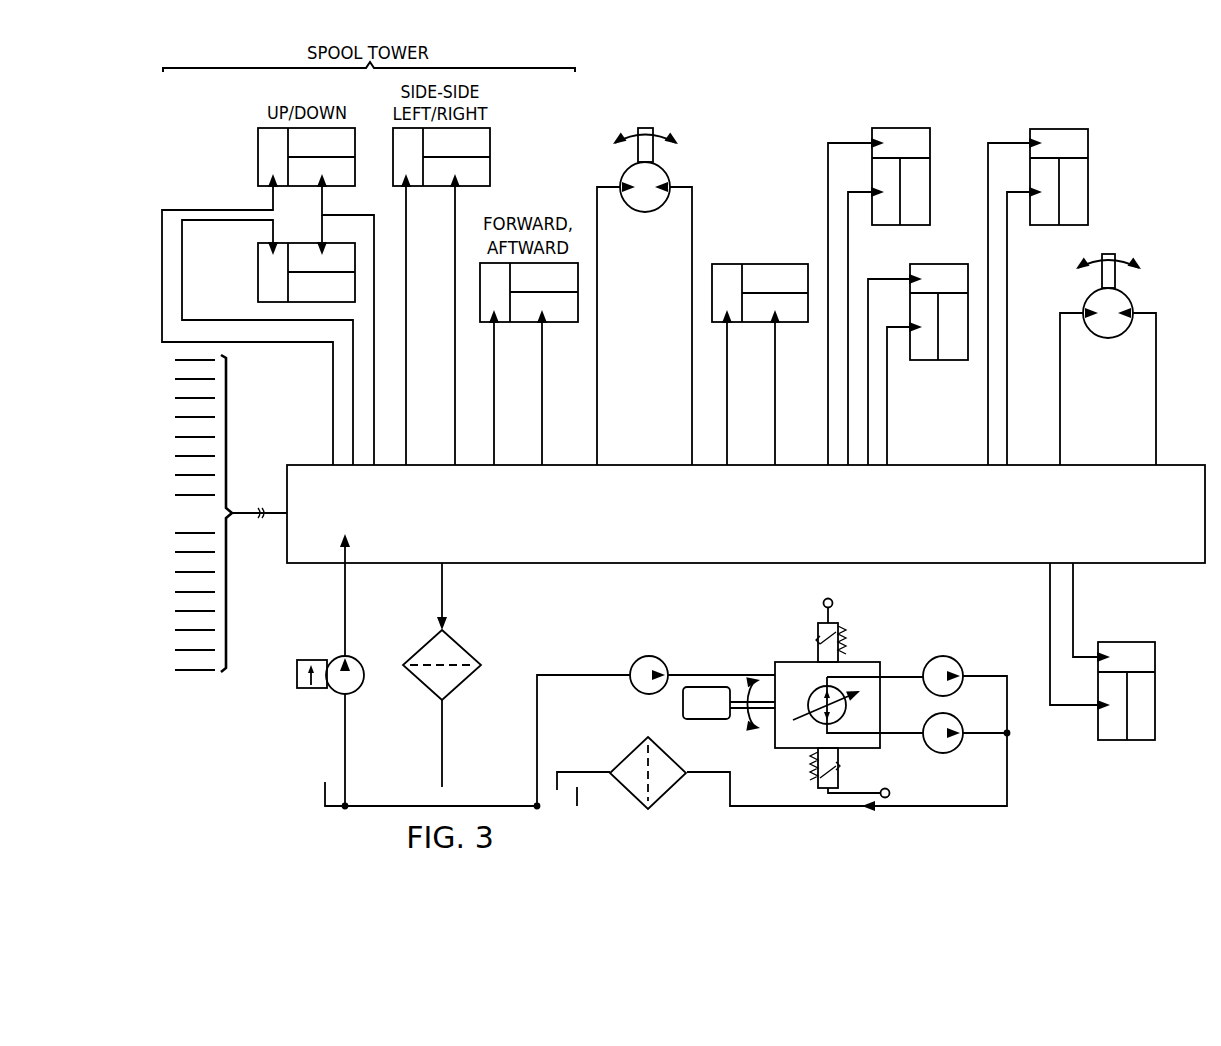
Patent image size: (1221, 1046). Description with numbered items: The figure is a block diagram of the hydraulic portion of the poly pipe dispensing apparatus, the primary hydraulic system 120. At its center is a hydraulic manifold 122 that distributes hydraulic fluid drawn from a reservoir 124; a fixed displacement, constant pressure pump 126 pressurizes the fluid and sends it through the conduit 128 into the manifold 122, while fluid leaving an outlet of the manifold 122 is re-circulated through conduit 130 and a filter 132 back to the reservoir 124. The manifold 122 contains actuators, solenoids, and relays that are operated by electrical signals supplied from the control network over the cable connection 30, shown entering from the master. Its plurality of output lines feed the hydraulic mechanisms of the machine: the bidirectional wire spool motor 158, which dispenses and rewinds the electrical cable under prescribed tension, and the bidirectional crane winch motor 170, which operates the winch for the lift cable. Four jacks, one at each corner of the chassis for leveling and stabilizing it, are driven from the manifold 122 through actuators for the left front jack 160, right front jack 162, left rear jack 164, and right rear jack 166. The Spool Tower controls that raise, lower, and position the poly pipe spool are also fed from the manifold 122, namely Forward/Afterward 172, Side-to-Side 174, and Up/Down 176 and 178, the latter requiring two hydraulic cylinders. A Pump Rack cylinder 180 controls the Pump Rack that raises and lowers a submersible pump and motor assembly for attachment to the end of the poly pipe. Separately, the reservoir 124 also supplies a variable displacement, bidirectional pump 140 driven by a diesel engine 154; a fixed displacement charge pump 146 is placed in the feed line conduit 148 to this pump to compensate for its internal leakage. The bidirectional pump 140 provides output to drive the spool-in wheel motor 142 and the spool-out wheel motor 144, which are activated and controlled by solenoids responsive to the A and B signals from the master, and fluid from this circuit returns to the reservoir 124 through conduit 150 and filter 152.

The cable connection 30 is at (228, 413).
The system 120 is at (220, 730).
The hydraulic manifold 122 is at (726, 546).
The reservoir 124 is at (322, 796).
The fixed displacement, constant pressure pump 126 is at (340, 694).
The conduit 128 is at (343, 596).
The conduit 130 is at (443, 588).
The filter 132 is at (462, 683).
The variable displacement, bidirectional pump 140 is at (865, 660).
The Spool IN wheel motor 142 is at (945, 655).
The Spool OUT wheel motor 144 is at (945, 755).
The fixed displacement charge pump 146 is at (650, 656).
The feed line conduit 148 is at (720, 673).
The conduit 150 is at (785, 808).
The filter 152 is at (670, 793).
The diesel engine 154 is at (708, 720).
The wire spool motor 158 is at (1128, 292).
The left front jack 160 is at (1090, 177).
The right front jack 162 is at (950, 362).
The left rear jack 164 is at (932, 138).
The right rear jack 166 is at (790, 324).
The winch motor 170 is at (663, 166).
The Forward/Afterward control 172 is at (556, 324).
The Side-to-Side control 174 is at (492, 143).
The Up/Down control 176 is at (256, 274).
The Up/Down control 178 is at (256, 157).
The Pump Rack cylinder 180 is at (1157, 690).